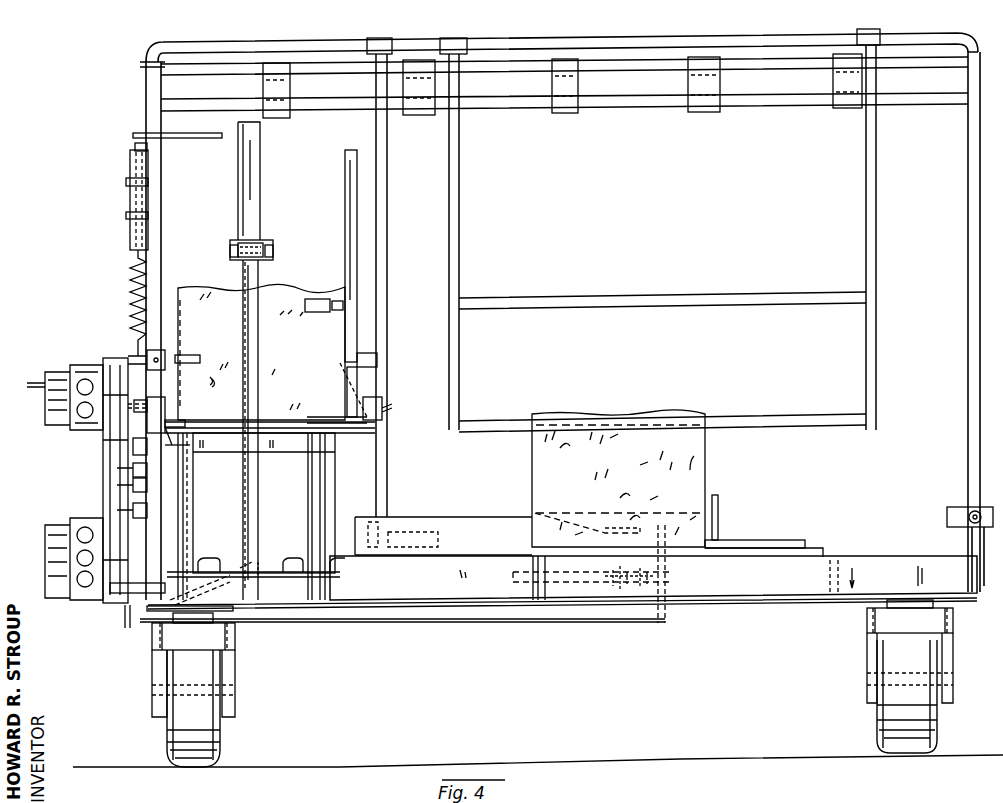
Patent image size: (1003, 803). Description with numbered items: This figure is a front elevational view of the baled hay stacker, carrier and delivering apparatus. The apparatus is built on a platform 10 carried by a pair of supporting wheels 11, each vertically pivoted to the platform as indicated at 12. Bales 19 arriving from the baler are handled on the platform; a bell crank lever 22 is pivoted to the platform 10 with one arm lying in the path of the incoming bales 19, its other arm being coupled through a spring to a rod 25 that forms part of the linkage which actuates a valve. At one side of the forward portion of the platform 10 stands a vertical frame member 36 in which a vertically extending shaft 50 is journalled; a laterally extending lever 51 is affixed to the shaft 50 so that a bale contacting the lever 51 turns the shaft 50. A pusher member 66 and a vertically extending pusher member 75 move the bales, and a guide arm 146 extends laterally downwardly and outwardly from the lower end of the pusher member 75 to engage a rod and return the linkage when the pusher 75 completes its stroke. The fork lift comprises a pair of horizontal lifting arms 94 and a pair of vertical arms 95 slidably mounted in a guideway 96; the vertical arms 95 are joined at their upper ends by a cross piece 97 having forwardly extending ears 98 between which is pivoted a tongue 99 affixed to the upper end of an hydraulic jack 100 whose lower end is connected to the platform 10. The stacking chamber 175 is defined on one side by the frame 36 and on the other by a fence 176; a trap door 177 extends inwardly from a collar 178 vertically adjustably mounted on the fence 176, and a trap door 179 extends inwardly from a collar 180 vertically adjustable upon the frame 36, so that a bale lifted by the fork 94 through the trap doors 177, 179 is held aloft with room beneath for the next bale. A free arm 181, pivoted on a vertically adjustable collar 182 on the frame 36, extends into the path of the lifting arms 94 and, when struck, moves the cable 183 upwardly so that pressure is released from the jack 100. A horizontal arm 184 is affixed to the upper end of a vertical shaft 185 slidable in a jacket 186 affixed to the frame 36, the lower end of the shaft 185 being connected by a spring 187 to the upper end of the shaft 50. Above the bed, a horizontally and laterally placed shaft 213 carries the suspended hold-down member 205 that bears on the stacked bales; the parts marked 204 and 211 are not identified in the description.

The platform 10 is at (472, 590).
The supporting wheels 11 is at (217, 722).
The vertical pivot 12 is at (187, 613).
The bales 19 is at (199, 291).
The bell crank lever 22 is at (534, 511).
The rod 25 is at (610, 612).
The vertical frame member 36 is at (158, 226).
The vertically extending shaft 50 is at (146, 380).
The laterally extending lever 51 is at (170, 450).
The pusher member 66 is at (719, 528).
The vertically extending pusher member 75 is at (264, 181).
The horizontal lifting arms 94 is at (212, 558).
The vertical arms 95 is at (193, 527).
The guideway 96 is at (186, 510).
The cross piece 97 is at (290, 455).
The forwardly extending ears 98 is at (239, 243).
The tongue 99 is at (266, 243).
The hydraulic jack 100 is at (260, 278).
The guide arm 146 is at (158, 613).
The stacking chamber 175 is at (284, 172).
The fence 176 is at (347, 236).
The trap door 177 is at (354, 423).
The collar 178 is at (383, 402).
The trap door 179 is at (178, 422).
The collar 180 is at (147, 420).
The free arm 181 is at (190, 357).
The vertically adjustable collar 182 is at (165, 350).
The cable 183 is at (167, 498).
The horizontal arm 184 is at (192, 138).
The vertical shaft 185 is at (134, 147).
The jacket 186 is at (129, 205).
The spring 187 is at (134, 300).
The top rail 204 is at (290, 66).
The holddown member 205 is at (323, 110).
The sleeve coupling 211 is at (291, 89).
The shaft 213 is at (214, 72).